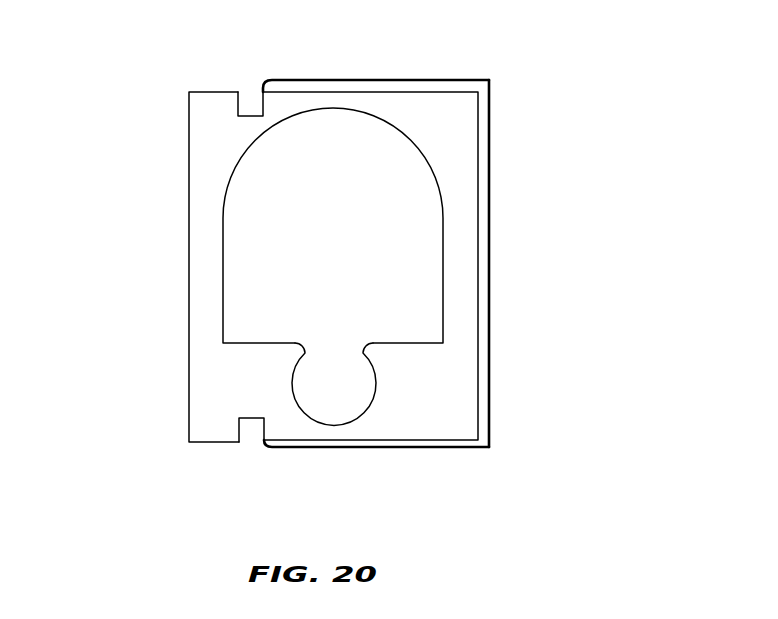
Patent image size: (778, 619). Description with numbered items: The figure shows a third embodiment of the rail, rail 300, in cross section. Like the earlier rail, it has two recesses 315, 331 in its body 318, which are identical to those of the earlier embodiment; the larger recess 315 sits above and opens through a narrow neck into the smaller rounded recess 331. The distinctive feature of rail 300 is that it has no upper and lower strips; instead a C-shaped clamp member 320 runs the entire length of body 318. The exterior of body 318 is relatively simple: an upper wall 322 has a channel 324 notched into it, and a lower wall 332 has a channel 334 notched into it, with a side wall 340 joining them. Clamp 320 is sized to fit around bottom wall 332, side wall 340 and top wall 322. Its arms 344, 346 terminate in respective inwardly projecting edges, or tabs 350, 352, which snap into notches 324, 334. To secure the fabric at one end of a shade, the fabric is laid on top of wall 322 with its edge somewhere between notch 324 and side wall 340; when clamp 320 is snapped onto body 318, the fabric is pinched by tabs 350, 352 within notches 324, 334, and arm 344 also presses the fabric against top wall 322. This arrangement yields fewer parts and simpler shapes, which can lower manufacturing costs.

The rail 300 is at (344, 274).
The recess 315 is at (346, 261).
The body 318 is at (186, 269).
The clamp member 320 is at (415, 274).
The upper wall 322 is at (430, 120).
The channel 324 is at (238, 95).
The recess 331 is at (350, 398).
The lower wall 332 is at (458, 394).
The channel 334 is at (242, 441).
The side wall 340 is at (462, 235).
The arm 344 is at (403, 78).
The arm 346 is at (432, 448).
The tab 350 is at (250, 104).
The tab 352 is at (250, 430).